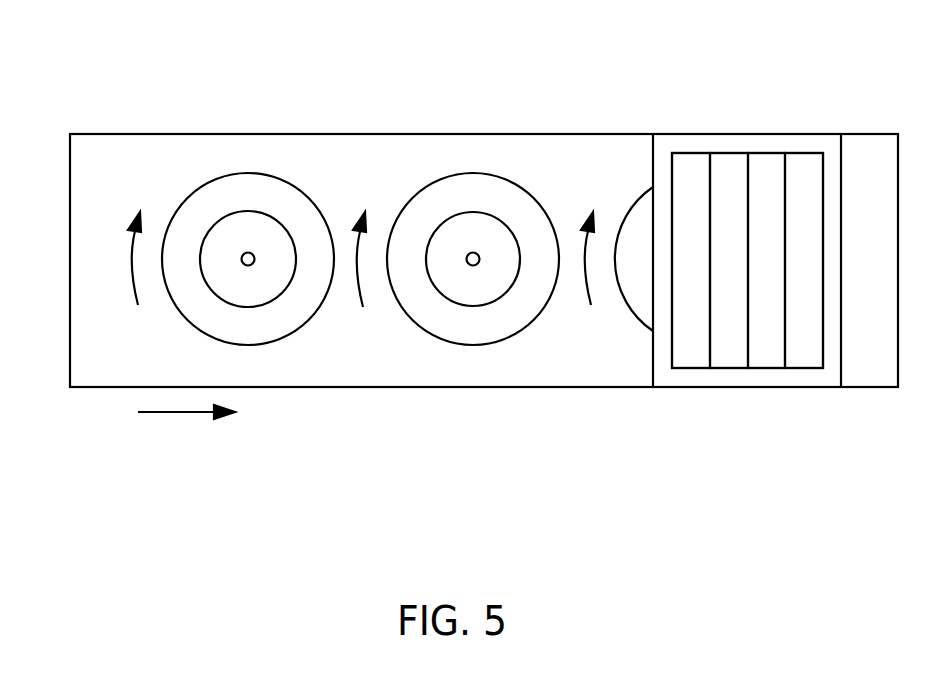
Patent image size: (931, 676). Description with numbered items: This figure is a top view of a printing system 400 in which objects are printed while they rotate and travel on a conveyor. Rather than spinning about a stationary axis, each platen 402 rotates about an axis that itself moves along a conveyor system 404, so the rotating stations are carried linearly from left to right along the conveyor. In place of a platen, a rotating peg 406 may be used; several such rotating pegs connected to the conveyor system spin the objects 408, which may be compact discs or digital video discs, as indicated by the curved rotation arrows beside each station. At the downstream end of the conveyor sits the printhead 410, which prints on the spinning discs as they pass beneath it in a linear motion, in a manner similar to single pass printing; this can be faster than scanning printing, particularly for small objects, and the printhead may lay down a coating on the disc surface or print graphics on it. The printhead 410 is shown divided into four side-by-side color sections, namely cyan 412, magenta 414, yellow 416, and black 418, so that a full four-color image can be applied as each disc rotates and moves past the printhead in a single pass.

The printing system 400 is at (106, 66).
The platen 402 is at (250, 171).
The conveyor system 404 is at (413, 388).
The rotating peg 406 is at (248, 252).
The object 408 is at (283, 273).
The printhead 410 is at (690, 135).
The cyan 412 is at (683, 360).
The magenta 414 is at (723, 360).
The yellow 416 is at (763, 362).
The black 418 is at (812, 363).